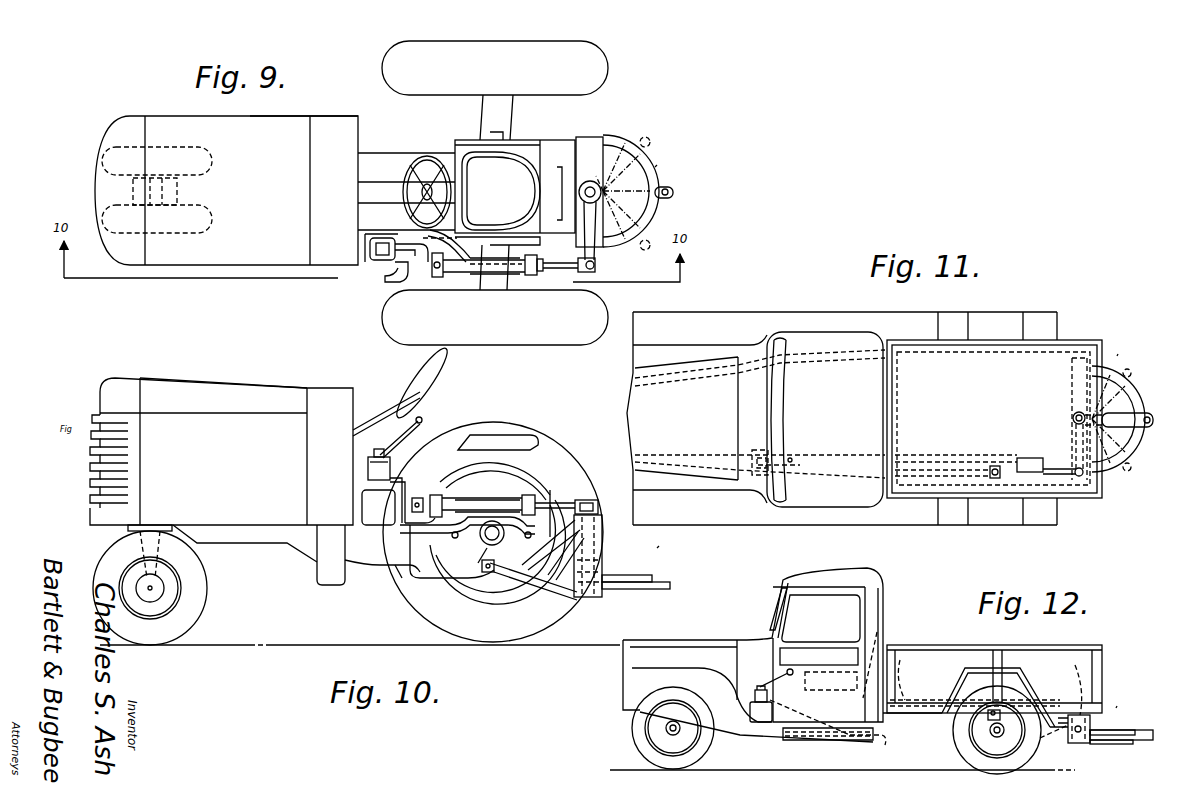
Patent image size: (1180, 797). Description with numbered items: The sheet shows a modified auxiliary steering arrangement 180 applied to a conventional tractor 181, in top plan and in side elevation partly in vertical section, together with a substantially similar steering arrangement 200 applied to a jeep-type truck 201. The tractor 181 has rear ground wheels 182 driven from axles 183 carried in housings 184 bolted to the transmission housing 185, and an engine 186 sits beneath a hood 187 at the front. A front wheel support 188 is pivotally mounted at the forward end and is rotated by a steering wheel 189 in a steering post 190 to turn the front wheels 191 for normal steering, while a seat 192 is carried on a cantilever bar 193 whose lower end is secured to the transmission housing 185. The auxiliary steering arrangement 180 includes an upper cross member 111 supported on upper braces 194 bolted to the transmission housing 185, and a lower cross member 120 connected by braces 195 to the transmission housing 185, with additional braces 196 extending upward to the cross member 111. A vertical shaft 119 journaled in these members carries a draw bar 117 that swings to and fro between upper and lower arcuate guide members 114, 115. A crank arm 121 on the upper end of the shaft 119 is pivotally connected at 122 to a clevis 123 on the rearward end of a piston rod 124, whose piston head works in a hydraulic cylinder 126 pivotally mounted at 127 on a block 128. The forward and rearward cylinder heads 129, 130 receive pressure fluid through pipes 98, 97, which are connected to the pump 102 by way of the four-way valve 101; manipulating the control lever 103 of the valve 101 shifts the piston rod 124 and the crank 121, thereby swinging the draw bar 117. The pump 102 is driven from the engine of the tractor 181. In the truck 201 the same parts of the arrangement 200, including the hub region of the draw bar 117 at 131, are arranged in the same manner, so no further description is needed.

In FIG. 9, the pipe 97 is at (460, 220).
In FIG. 10, the pipe 97 is at (430, 527).
In FIG. 11, the pipe 97 is at (993, 455).
In FIG. 12, the pipe 97 is at (906, 698).
In FIG. 9, the pipe 98 is at (418, 276).
In FIG. 10, the pipe 98 is at (405, 483).
In FIG. 11, the pipe 98 is at (930, 463).
In FIG. 12, the pipe 98 is at (884, 746).
In FIG. 9, the four-way valve 101 is at (382, 238).
In FIG. 10, the four-way valve 101 is at (368, 483).
In FIG. 11, the four-way valve 101 is at (760, 476).
In FIG. 12, the four-way valve 101 is at (758, 690).
In FIG. 9, the pump 102 is at (378, 264).
In FIG. 10, the pump 102 is at (376, 520).
In FIG. 11, the pump 102 is at (757, 452).
In FIG. 12, the pump 102 is at (752, 724).
In FIG. 10, the control lever 103 is at (408, 436).
In FIG. 11, the control lever 103 is at (793, 457).
In FIG. 12, the control lever 103 is at (786, 679).
In FIG. 9, the cross member 111 is at (598, 176).
In FIG. 12, the cross member 111 is at (1065, 737).
In FIG. 9, the arcuate guide member 114 is at (650, 172).
In FIG. 10, the arcuate guide member 114 is at (641, 568).
In FIG. 11, the arcuate guide member 114 is at (1130, 460).
In FIG. 12, the arcuate guide member 114 is at (1110, 736).
In FIG. 10, the arcuate guide member 115 is at (640, 590).
In FIG. 12, the arcuate guide member 115 is at (1115, 745).
In FIG. 9, the draw bar 117 is at (675, 197).
In FIG. 10, the draw bar 117 is at (672, 584).
In FIG. 11, the draw bar 117 is at (1148, 413).
In FIG. 12, the draw bar 117 is at (1150, 730).
In FIG. 9, the vertical shaft 119 is at (590, 181).
In FIG. 10, the vertical shaft 119 is at (596, 556).
In FIG. 11, the vertical shaft 119 is at (1073, 418).
In FIG. 12, the vertical shaft 119 is at (1076, 744).
In FIG. 10, the lower cross member 120 is at (596, 598).
In FIG. 11, the lower cross member 120 is at (1072, 392).
In FIG. 12, the lower cross member 120 is at (1081, 745).
In FIG. 9, the crank arm 121 is at (603, 232).
In FIG. 10, the crank arm 121 is at (600, 506).
In FIG. 11, the crank arm 121 is at (1074, 448).
In FIG. 12, the crank arm 121 is at (1075, 666).
In FIG. 9, the pivotal connection 122 is at (592, 272).
In FIG. 10, the pivotal connection 122 is at (595, 497).
In FIG. 11, the pivotal connection 122 is at (1083, 478).
In FIG. 9, the clevis 123 is at (575, 272).
In FIG. 10, the clevis 123 is at (590, 495).
In FIG. 9, the piston rod 124 is at (570, 266).
In FIG. 10, the piston rod 124 is at (562, 496).
In FIG. 11, the piston rod 124 is at (1062, 469).
In FIG. 12, the piston rod 124 is at (1063, 716).
In FIG. 9, the hydraulic cylinder 126 is at (477, 278).
In FIG. 10, the hydraulic cylinder 126 is at (466, 496).
In FIG. 11, the hydraulic cylinder 126 is at (1020, 457).
In FIG. 12, the hydraulic cylinder 126 is at (995, 722).
In FIG. 10, the pivotal mounting 127 is at (394, 580).
In FIG. 11, the pivotal mounting 127 is at (995, 479).
In FIG. 12, the pivotal mounting 127 is at (990, 740).
In FIG. 9, the block 128 is at (400, 272).
In FIG. 10, the block 128 is at (418, 578).
In FIG. 11, the block 128 is at (990, 473).
In FIG. 9, the forward cylinder head 129 is at (442, 278).
In FIG. 10, the forward cylinder head 129 is at (440, 483).
In FIG. 9, the rearward cylinder head 130 is at (535, 282).
In FIG. 10, the rearward cylinder head 130 is at (530, 495).
In FIG. 9, the hitch pin opening 131 is at (674, 189).
In FIG. 11, the hitch pin opening 131 is at (1147, 427).
In FIG. 9, the auxiliary steering arrangement 180 is at (658, 165).
In FIG. 10, the auxiliary steering arrangement 180 is at (659, 546).
In FIG. 9, the tractor 181 is at (318, 110).
In FIG. 10, the tractor 181 is at (291, 385).
In FIG. 9, the rear ground wheels 182 is at (600, 64).
In FIG. 10, the rear ground wheels 182 is at (570, 446).
In FIG. 10, the axles 183 is at (480, 541).
In FIG. 9, the housings 184 is at (505, 112).
In FIG. 10, the housings 184 is at (484, 545).
In FIG. 9, the transmission housing 185 is at (441, 145).
In FIG. 10, the transmission housing 185 is at (368, 560).
In FIG. 10, the engine 186 is at (262, 541).
In FIG. 9, the hood 187 is at (268, 122).
In FIG. 10, the hood 187 is at (218, 388).
In FIG. 9, the front wheel support 188 is at (177, 192).
In FIG. 10, the front wheel support 188 is at (128, 532).
In FIG. 9, the steering wheel 189 is at (406, 175).
In FIG. 10, the steering wheel 189 is at (427, 383).
In FIG. 9, the steering post 190 is at (372, 182).
In FIG. 10, the steering post 190 is at (384, 405).
In FIG. 9, the front wheels 191 is at (212, 152).
In FIG. 10, the front wheels 191 is at (209, 594).
In FIG. 9, the seat 192 is at (480, 160).
In FIG. 10, the seat 192 is at (512, 433).
In FIG. 9, the cantilever bar 193 is at (458, 172).
In FIG. 10, the cantilever bar 193 is at (440, 466).
In FIG. 9, the upper braces 194 is at (572, 137).
In FIG. 10, the upper braces 194 is at (526, 530).
In FIG. 10, the braces 195 is at (545, 590).
In FIG. 10, the additional braces 196 is at (512, 592).
In FIG. 11, the steering arrangement 200 is at (1118, 354).
In FIG. 12, the steering arrangement 200 is at (1117, 706).
In FIG. 11, the truck 201 is at (857, 311).
In FIG. 12, the truck 201 is at (889, 627).